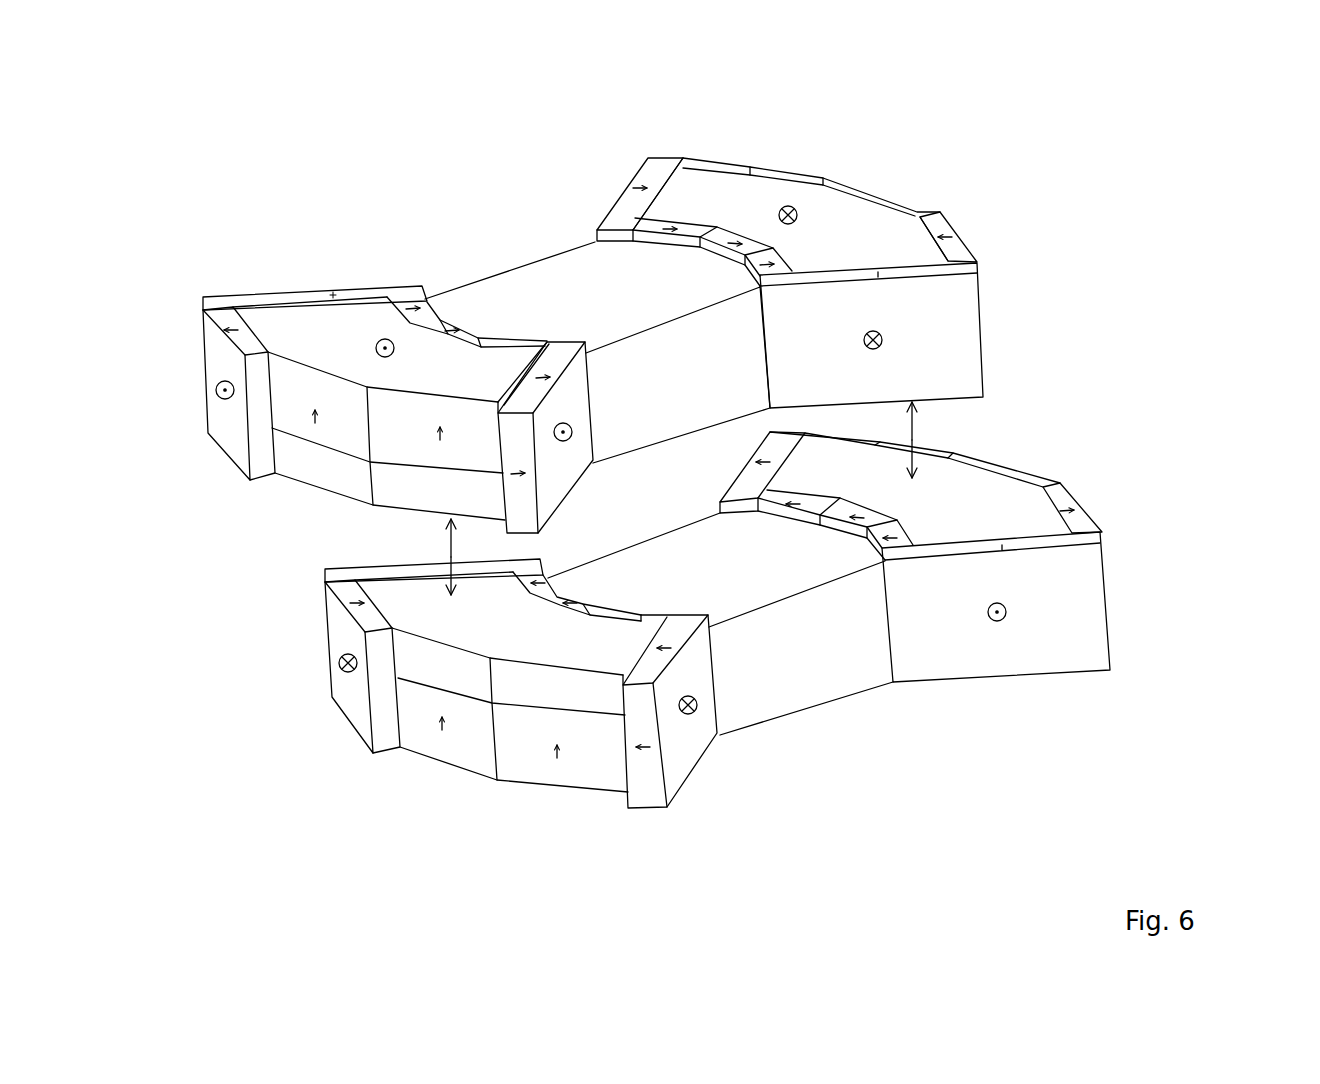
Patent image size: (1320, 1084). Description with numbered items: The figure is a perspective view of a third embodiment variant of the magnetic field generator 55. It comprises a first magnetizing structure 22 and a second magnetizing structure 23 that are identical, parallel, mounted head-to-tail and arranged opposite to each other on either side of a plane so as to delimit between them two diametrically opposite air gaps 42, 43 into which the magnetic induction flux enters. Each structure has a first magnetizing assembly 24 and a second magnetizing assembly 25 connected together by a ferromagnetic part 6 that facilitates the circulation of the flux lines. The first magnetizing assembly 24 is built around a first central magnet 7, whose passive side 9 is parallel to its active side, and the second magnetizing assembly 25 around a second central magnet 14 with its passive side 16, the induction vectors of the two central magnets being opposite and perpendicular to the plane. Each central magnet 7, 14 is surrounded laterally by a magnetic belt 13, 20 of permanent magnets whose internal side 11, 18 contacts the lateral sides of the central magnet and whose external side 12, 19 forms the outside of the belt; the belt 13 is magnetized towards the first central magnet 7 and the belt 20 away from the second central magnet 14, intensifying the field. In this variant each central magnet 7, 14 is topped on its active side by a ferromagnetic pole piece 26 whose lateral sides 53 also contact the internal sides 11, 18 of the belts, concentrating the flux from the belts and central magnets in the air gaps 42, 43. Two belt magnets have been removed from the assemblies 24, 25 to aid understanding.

The ferromagnetic part 6 is at (577, 265).
The first central magnet 7 is at (470, 757).
The passive side 9 is at (727, 187).
The internal side 11 is at (377, 603).
The external side 12 is at (967, 345).
The magnetic belt 13 is at (631, 177).
The second central magnet 14 is at (297, 424).
The passive side 16 is at (377, 303).
The internal side 18 is at (250, 332).
The external side 19 is at (226, 432).
The magnetic belt 20 is at (295, 306).
The first magnetizing structure 22 is at (1137, 523).
The second magnetizing structure 23 is at (1015, 265).
The first magnetizing assembly 24 is at (796, 147).
The second magnetizing assembly 25 is at (297, 280).
The pole piece 26 is at (450, 596).
The air gap 42 is at (448, 547).
The air gap 43 is at (915, 400).
The lateral sides 53 is at (520, 687).
The magnetic field generator 55 is at (1165, 200).